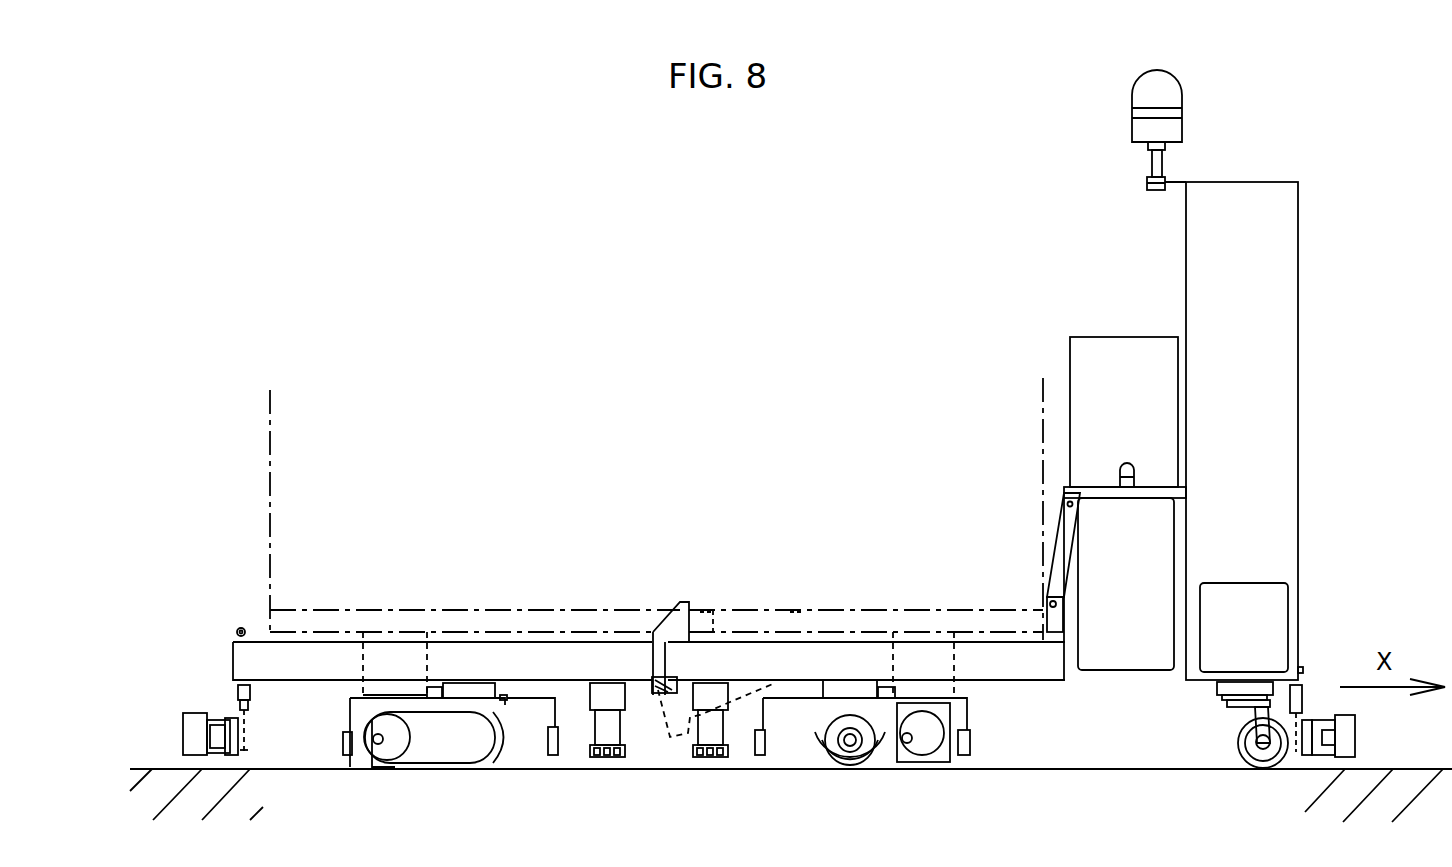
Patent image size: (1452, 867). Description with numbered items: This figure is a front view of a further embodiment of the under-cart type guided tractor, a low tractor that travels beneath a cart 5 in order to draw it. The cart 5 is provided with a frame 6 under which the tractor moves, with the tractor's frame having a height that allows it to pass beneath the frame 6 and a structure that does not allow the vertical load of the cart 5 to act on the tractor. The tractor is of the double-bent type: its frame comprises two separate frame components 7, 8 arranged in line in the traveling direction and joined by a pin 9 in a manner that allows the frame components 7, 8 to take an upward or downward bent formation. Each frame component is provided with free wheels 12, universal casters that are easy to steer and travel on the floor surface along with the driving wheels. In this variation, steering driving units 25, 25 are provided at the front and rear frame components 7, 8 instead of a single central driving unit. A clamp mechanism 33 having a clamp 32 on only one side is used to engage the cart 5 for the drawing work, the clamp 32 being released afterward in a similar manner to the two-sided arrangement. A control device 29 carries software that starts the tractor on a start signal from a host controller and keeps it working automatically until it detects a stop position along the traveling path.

The cart 5 is at (292, 393).
The frame of the cart 6 is at (705, 618).
The front frame component 7 is at (867, 653).
The rear frame component 8 is at (523, 650).
The pin 9 is at (657, 697).
The free wheel 12 is at (362, 757).
The steering driving unit 25 is at (443, 797).
The control device 29 is at (1268, 347).
The clamp 32 is at (682, 617).
The clamp mechanism 33 is at (797, 627).